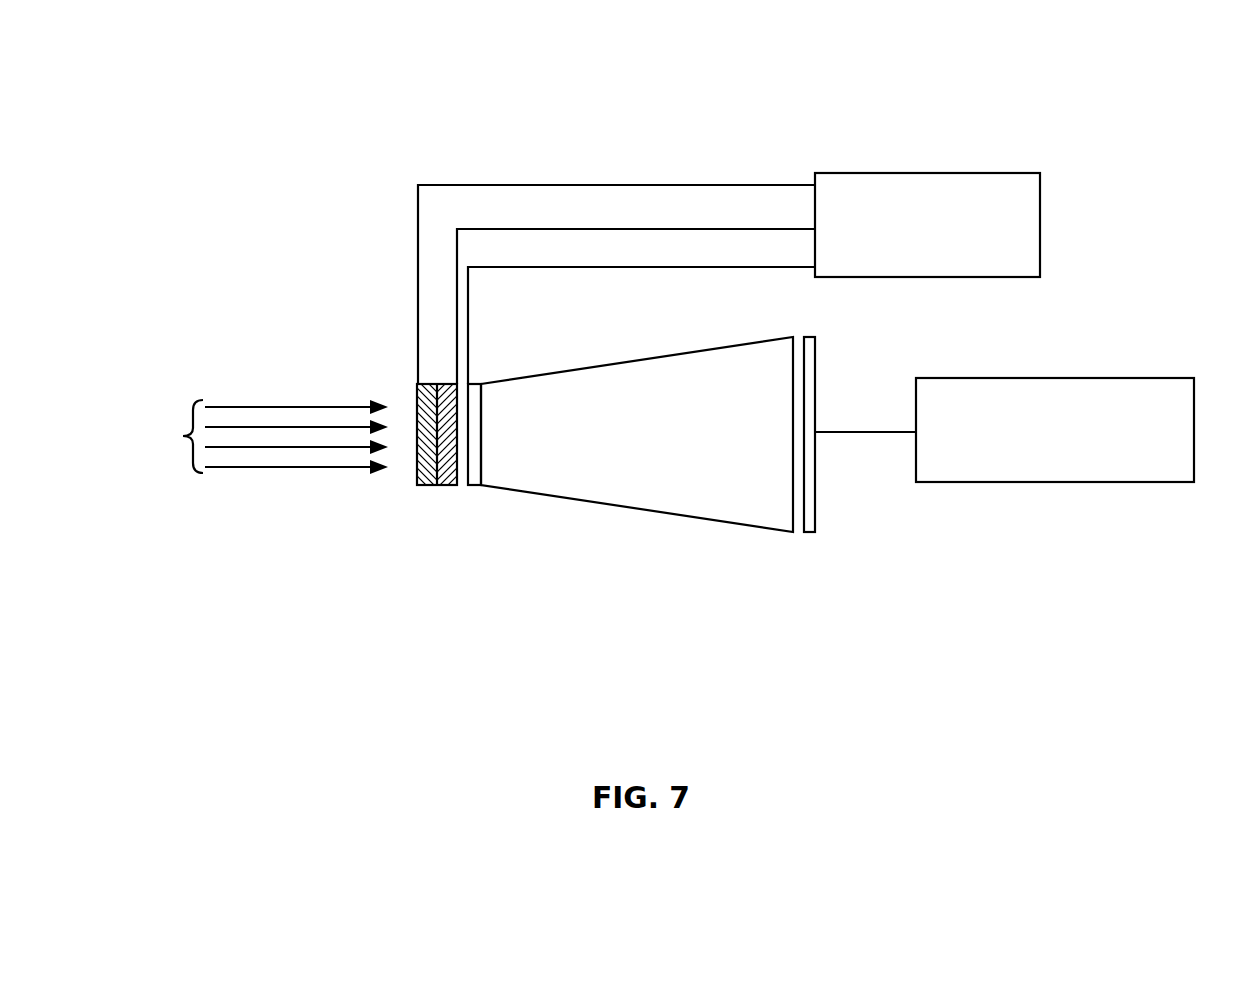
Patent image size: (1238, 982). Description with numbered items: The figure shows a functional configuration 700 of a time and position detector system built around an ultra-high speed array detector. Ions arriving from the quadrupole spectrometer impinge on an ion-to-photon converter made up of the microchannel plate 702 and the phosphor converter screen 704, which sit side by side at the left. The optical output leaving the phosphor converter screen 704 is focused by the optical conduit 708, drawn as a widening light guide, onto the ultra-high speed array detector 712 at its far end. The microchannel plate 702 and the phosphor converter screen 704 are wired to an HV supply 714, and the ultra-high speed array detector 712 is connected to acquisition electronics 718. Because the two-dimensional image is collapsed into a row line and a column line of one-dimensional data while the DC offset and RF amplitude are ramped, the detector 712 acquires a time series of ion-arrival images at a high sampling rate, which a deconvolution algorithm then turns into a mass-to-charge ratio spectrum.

The functional configuration 700 is at (232, 122).
The microchannel plate 702 is at (436, 485).
The phosphor converter screen 704 is at (479, 485).
The optical conduit 708 is at (712, 521).
The ultra-high speed array detector 712 is at (808, 532).
The HV supply 714 is at (960, 173).
The acquisition electronics 718 is at (1067, 378).